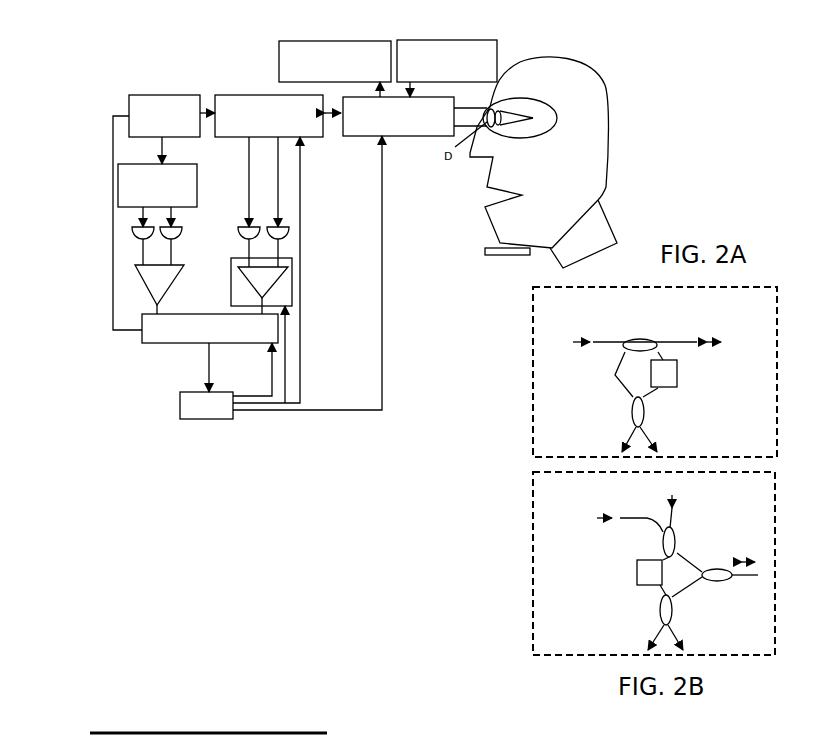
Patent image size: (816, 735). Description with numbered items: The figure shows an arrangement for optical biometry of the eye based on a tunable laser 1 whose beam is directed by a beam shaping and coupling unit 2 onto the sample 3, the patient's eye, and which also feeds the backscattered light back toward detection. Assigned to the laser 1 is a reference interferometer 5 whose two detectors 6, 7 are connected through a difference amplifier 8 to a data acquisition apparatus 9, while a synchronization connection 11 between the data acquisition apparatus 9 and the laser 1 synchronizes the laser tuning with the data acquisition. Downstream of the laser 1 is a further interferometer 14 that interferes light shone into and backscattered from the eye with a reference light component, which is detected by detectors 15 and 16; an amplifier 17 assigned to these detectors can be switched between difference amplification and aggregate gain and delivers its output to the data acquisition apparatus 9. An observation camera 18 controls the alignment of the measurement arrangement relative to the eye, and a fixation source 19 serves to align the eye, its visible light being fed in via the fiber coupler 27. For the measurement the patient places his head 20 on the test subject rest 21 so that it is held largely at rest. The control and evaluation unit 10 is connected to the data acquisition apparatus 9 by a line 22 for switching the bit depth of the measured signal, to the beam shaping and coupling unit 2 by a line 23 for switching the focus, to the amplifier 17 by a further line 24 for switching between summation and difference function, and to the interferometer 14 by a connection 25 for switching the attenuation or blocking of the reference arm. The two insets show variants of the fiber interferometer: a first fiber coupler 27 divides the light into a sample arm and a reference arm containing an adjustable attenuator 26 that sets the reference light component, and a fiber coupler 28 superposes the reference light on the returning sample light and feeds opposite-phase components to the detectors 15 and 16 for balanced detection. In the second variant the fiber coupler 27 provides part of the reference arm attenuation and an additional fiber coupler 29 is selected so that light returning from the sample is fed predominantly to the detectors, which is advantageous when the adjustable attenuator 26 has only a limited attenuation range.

In FIG. 2A, the tunable laser 1 is at (158, 109).
In FIG. 2A, the beam shaping and coupling unit 2 is at (397, 136).
In FIG. 2A, the sample 3 is at (507, 130).
In FIG. 2A, the reference interferometer 5 is at (143, 182).
In FIG. 2A, the detector 6 is at (140, 256).
In FIG. 2A, the detector 7 is at (178, 236).
In FIG. 2A, the difference amplifier 8 is at (158, 285).
In FIG. 2A, the data acquisition apparatus 9 is at (170, 332).
In FIG. 2A, the control and evaluation unit 10 is at (203, 400).
In FIG. 2A, the synchronization connection 11 is at (113, 225).
In FIG. 2A, the interferometer 14 is at (253, 117).
In FIG. 2A, the detector 15 is at (242, 230).
In FIG. 2A, the detector 16 is at (288, 232).
In FIG. 2A, the amplifier 17 is at (275, 285).
In FIG. 2A, the observation camera 18 is at (307, 41).
In FIG. 2A, the fixation source 19 is at (463, 40).
In FIG. 2A, the head 20 is at (550, 198).
In FIG. 2A, the test subject rest 21 is at (503, 255).
In FIG. 2A, the line 22 is at (270, 377).
In FIG. 2A, the line 23 is at (363, 417).
In FIG. 2A, the line 24 is at (288, 405).
In FIG. 2A, the connection 25 is at (303, 348).
In FIG. 2A, the adjustable attenuator 26 is at (662, 378).
In FIG. 2B, the adjustable attenuator 26 is at (647, 572).
In FIG. 2A, the first fiber coupler 27 is at (640, 340).
In FIG. 2B, the first fiber coupler 27 is at (678, 540).
In FIG. 2A, the fiber coupler 28 is at (637, 415).
In FIG. 2B, the fiber coupler 28 is at (667, 612).
In FIG. 2B, the fiber coupler 29 is at (717, 569).